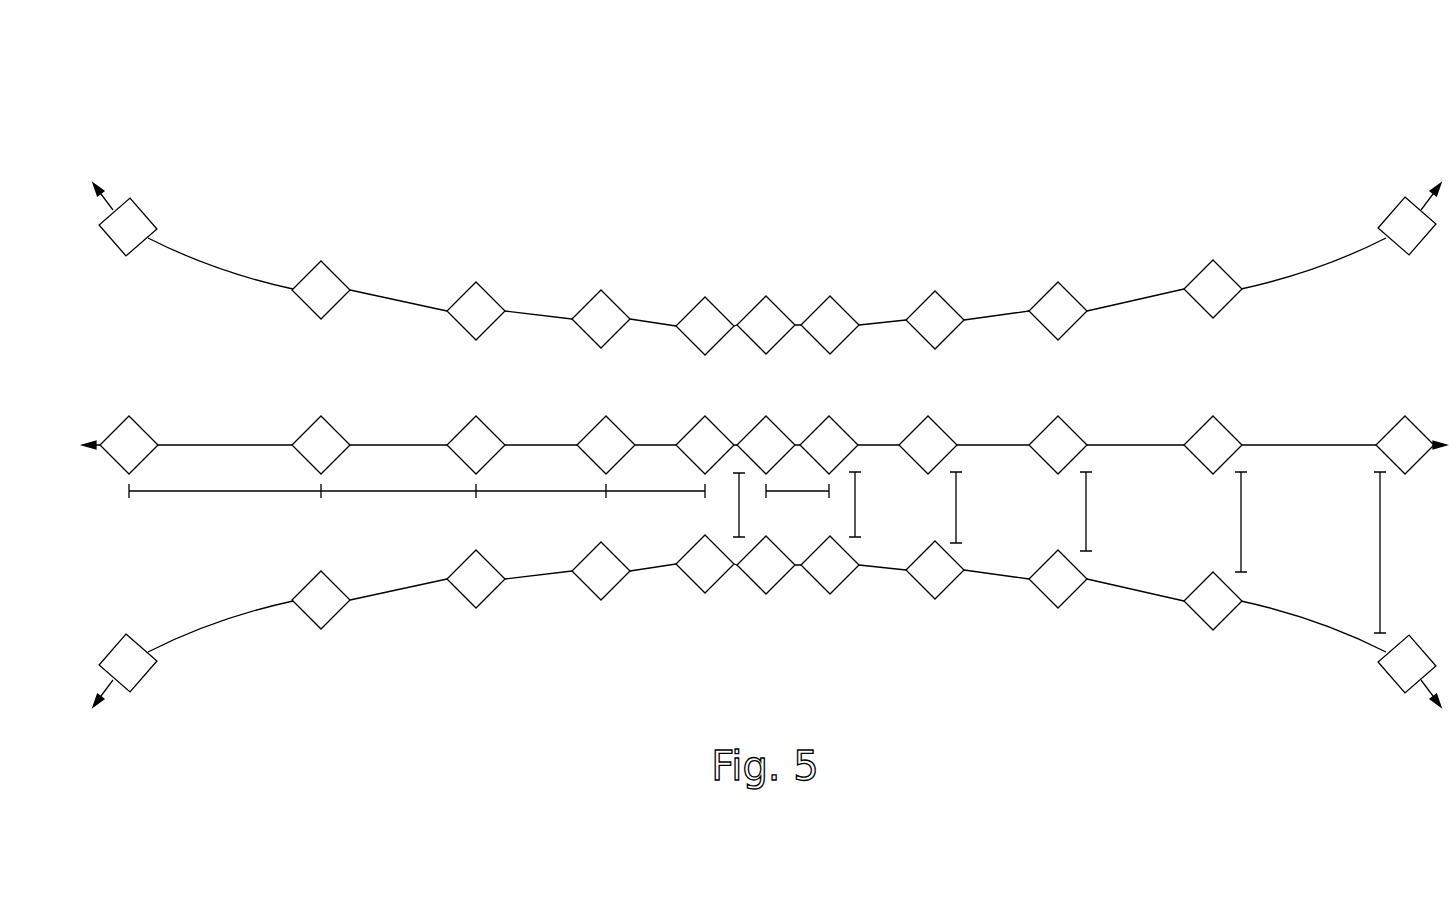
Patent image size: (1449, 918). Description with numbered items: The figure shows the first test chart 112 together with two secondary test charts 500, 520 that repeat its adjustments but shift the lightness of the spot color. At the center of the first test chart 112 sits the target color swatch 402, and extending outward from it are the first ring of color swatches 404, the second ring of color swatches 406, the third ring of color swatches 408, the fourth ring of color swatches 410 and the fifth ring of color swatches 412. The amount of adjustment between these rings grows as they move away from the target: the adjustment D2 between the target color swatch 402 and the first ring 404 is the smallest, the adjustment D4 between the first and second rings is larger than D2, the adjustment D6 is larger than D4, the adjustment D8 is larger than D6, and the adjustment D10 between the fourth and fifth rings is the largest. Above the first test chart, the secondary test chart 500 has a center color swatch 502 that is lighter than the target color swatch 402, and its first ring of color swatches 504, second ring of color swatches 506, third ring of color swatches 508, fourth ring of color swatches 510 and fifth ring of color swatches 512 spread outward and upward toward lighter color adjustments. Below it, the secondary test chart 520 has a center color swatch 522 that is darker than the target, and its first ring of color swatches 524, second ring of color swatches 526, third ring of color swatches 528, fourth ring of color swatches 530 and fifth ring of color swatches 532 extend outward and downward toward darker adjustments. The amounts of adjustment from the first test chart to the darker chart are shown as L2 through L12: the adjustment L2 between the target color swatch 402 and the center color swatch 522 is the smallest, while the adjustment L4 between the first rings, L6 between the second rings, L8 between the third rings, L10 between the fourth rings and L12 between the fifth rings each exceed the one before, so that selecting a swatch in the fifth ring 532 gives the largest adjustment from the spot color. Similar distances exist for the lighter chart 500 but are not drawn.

The secondary test chart 500 is at (767, 233).
The fifth ring of color swatches 512 is at (128, 198).
The fourth ring of color swatches 510 is at (321, 261).
The third ring of color swatches 508 is at (476, 282).
The second ring of color swatches 506 is at (600, 290).
The first ring of color swatches 504 is at (705, 297).
The center color swatch 502 is at (766, 296).
The first test chart 112 is at (764, 399).
The fifth ring of color swatches 412 is at (129, 416).
The fourth ring of color swatches 410 is at (321, 416).
The third ring of color swatches 408 is at (476, 416).
The second ring of color swatches 406 is at (606, 416).
The first ring of color swatches 404 is at (705, 416).
The target color swatch 402 is at (766, 416).
The secondary test chart 520 is at (767, 658).
The fifth ring of color swatches 532 is at (127, 692).
The fourth ring of color swatches 530 is at (320, 629).
The third ring of color swatches 528 is at (476, 608).
The second ring of color swatches 526 is at (600, 600).
The first ring of color swatches 524 is at (705, 593).
The center color swatch 522 is at (766, 594).
The amount of adjustment D10 is at (225, 498).
The amount of adjustment D8 is at (398, 498).
The amount of adjustment D6 is at (541, 498).
The amount of adjustment D4 is at (655, 498).
The amount of adjustment D2 is at (800, 498).
The amount of adjustment L2 is at (737, 506).
The amount of adjustment L4 is at (857, 504).
The amount of adjustment L6 is at (958, 504).
The amount of adjustment L8 is at (1088, 504).
The amount of adjustment L10 is at (1243, 504).
The amount of adjustment L12 is at (1378, 504).